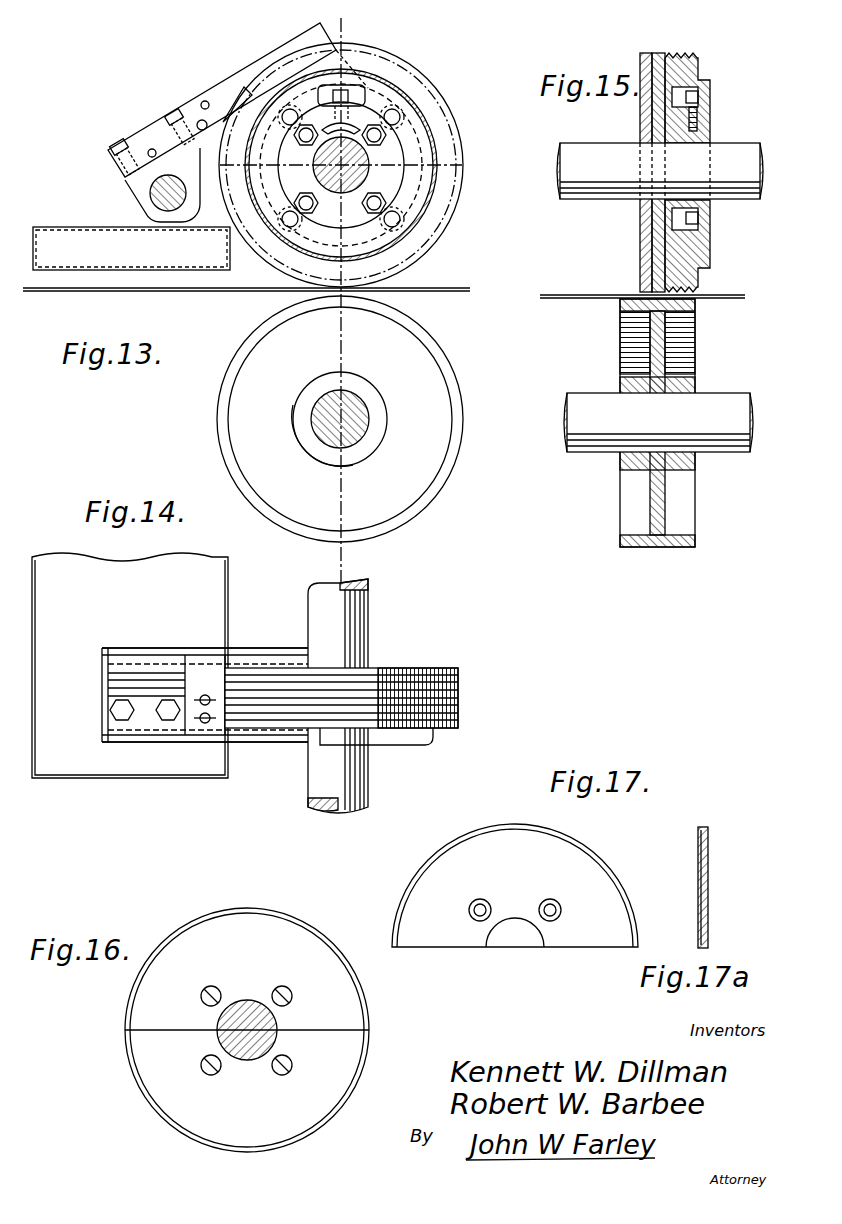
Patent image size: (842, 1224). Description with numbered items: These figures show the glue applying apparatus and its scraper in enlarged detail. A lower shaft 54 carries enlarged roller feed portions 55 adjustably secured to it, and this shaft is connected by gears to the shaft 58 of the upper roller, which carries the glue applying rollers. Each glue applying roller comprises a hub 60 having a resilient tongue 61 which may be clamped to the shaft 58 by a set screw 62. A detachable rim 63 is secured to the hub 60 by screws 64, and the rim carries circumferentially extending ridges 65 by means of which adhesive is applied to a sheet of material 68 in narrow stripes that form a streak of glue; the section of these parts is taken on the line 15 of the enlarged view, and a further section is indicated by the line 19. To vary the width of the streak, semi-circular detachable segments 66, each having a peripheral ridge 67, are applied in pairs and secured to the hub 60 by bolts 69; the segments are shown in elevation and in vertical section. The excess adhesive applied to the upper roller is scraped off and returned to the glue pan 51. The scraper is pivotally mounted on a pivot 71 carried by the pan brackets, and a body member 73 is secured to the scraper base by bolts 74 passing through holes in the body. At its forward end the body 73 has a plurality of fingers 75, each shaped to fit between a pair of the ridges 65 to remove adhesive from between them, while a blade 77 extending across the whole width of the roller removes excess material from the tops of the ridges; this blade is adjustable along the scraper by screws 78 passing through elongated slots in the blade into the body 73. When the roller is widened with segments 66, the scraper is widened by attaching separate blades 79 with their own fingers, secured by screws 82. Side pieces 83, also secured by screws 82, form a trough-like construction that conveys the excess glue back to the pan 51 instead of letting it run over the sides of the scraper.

In FIG. 13, the section line 15— 15 is at (328, 25).
In FIG. 13, the section line 19— 19 is at (296, 120).
In FIG. 13, the glue pan 51 is at (98, 270).
In FIG. 14, the glue pan 51 is at (72, 560).
In FIG. 13, the lower shaft 54 is at (330, 426).
In FIG. 15, the lower shaft 54 is at (736, 452).
In FIG. 14, the lower shaft 54 is at (342, 612).
In FIG. 13, the roller feed portions 55 is at (460, 450).
In FIG. 15, the roller feed portions 55 is at (657, 423).
In FIG. 13, the shaft of the upper roller 58 is at (356, 164).
In FIG. 15, the shaft of the upper roller 58 is at (745, 158).
In FIG. 16, the shaft of the upper roller 58 is at (250, 1052).
In FIG. 13, the hub 60 is at (328, 214).
In FIG. 15, the hub 60 is at (710, 208).
In FIG. 13, the resilient tongue 61 is at (380, 125).
In FIG. 15, the resilient tongue 61 is at (706, 140).
In FIG. 13, the set screw 62 is at (345, 93).
In FIG. 15, the set screw 62 is at (698, 98).
In FIG. 13, the detachable rim 63 is at (432, 124).
In FIG. 15, the detachable rim 63 is at (700, 274).
In FIG. 14, the detachable rim 63 is at (404, 745).
In FIG. 13, the screws 64 is at (400, 222).
In FIG. 15, the screws 64 is at (712, 228).
In FIG. 13, the circumferentially extending ridges 65 is at (428, 98).
In FIG. 15, the circumferentially extending ridges 65 is at (688, 55).
In FIG. 14, the circumferentially extending ridges 65 is at (458, 720).
In FIG. 15, the semi-circular detachable segments 66 is at (640, 118).
In FIG. 16, the semi-circular detachable segments 66 is at (338, 996).
In FIG. 17, the semi-circular detachable segments 66 is at (616, 912).
In FIG. 17A, the semi-circular detachable segments 66 is at (708, 885).
In FIG. 15, the peripheral ridge 67 is at (645, 53).
In FIG. 16, the peripheral ridge 67 is at (290, 918).
In FIG. 17, the peripheral ridge 67 is at (588, 847).
In FIG. 17A, the peripheral ridge 67 is at (700, 828).
In FIG. 13, the sheet of material 68 is at (432, 291).
In FIG. 15, the sheet of material 68 is at (736, 298).
In FIG. 13, the bolts 69 is at (384, 132).
In FIG. 16, the bolts 69 is at (284, 986).
In FIG. 13, the pivot 71 is at (158, 196).
In FIG. 13, the body member 73 is at (196, 108).
In FIG. 14, the body member 73 is at (108, 700).
In FIG. 13, the bolts 74 is at (118, 143).
In FIG. 14, the bolts 74 is at (166, 716).
In FIG. 14, the fingers 75 is at (262, 730).
In FIG. 13, the blade 77 is at (233, 96).
In FIG. 14, the blade 77 is at (200, 705).
In FIG. 13, the screws 78 is at (204, 101).
In FIG. 14, the screws 78 is at (212, 722).
In FIG. 14, the separate blades 79 is at (108, 678).
In FIG. 13, the screws 82 is at (150, 149).
In FIG. 14, the side pieces 83 is at (235, 648).